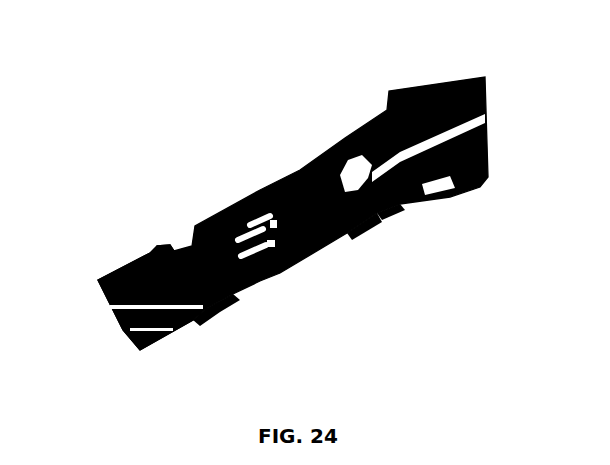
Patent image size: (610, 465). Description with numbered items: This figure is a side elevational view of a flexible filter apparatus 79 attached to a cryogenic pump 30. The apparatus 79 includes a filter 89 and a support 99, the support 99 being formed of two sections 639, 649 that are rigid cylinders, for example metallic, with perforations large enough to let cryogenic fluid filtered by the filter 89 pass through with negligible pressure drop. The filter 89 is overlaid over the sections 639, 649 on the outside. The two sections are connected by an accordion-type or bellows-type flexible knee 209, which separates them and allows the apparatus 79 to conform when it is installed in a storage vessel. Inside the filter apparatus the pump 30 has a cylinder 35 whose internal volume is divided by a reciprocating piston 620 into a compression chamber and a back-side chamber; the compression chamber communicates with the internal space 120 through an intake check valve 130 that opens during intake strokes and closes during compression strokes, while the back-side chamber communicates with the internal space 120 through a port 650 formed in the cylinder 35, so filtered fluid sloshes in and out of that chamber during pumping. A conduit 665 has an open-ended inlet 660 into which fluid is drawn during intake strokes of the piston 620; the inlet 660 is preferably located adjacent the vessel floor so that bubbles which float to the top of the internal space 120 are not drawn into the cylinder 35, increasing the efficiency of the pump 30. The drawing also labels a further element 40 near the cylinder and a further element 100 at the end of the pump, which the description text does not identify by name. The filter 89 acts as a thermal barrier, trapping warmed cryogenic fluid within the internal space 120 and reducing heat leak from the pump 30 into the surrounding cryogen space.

The cryogenic pump 30 is at (487, 148).
The cylinder 35 is at (347, 233).
The carrier 40 is at (280, 268).
The flexible filter apparatus 79 is at (106, 187).
The filter 89 is at (115, 262).
The support 99 is at (152, 252).
The end cap 100 is at (478, 187).
The internal space 120 is at (128, 337).
The intake check valve 130 is at (265, 185).
The flexible knee 209 is at (217, 300).
The piston 620 is at (390, 203).
The section 639 is at (135, 260).
The section 649 is at (310, 162).
The conduit (port) 650 is at (365, 130).
The inlet 660 is at (173, 333).
The conduit 665 is at (187, 240).